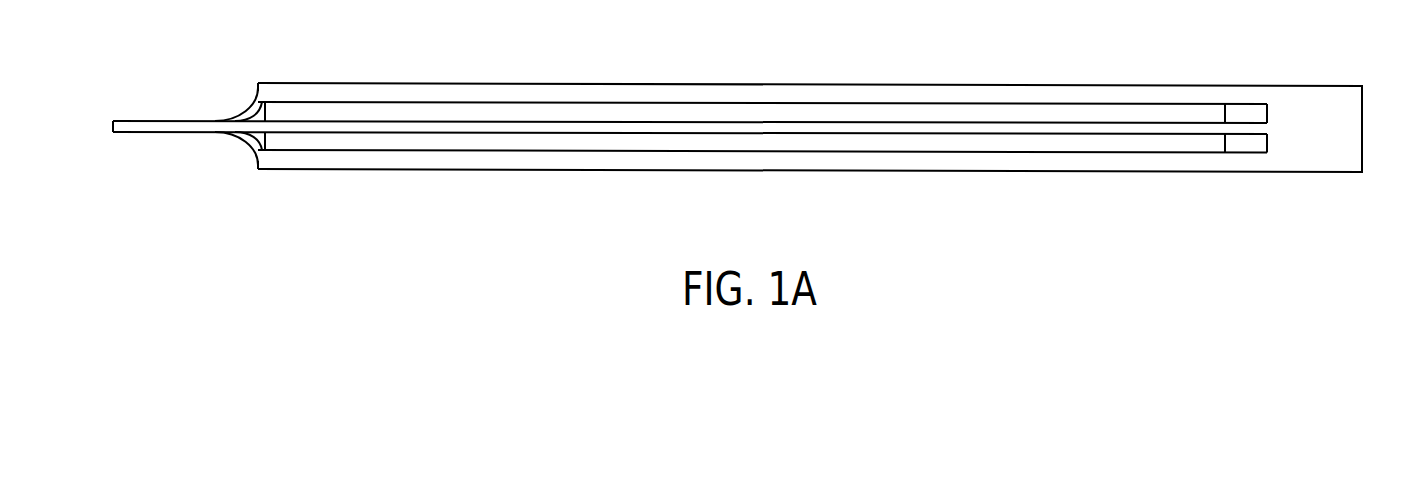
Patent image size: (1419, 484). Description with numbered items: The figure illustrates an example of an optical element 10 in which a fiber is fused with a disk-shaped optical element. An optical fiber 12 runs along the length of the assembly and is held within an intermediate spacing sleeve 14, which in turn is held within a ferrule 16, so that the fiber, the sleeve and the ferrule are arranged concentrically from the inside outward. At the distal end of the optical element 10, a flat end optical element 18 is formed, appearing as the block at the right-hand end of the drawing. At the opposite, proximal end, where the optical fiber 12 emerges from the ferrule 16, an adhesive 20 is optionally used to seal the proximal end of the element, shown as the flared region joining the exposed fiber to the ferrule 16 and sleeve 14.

The optical element 10 is at (493, 200).
The optical fiber 12 is at (865, 128).
The intermediate spacing sleeve 14 is at (633, 103).
The ferrule 16 is at (408, 83).
The flat end optical element 18 is at (1363, 129).
The adhesive 20 is at (238, 114).